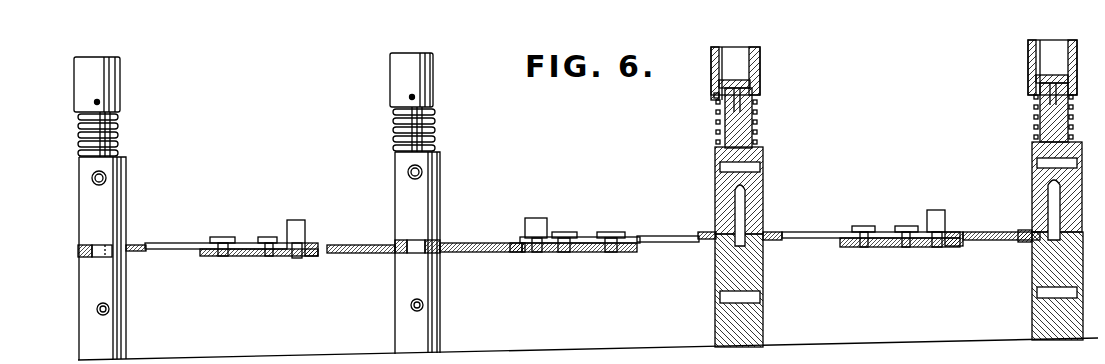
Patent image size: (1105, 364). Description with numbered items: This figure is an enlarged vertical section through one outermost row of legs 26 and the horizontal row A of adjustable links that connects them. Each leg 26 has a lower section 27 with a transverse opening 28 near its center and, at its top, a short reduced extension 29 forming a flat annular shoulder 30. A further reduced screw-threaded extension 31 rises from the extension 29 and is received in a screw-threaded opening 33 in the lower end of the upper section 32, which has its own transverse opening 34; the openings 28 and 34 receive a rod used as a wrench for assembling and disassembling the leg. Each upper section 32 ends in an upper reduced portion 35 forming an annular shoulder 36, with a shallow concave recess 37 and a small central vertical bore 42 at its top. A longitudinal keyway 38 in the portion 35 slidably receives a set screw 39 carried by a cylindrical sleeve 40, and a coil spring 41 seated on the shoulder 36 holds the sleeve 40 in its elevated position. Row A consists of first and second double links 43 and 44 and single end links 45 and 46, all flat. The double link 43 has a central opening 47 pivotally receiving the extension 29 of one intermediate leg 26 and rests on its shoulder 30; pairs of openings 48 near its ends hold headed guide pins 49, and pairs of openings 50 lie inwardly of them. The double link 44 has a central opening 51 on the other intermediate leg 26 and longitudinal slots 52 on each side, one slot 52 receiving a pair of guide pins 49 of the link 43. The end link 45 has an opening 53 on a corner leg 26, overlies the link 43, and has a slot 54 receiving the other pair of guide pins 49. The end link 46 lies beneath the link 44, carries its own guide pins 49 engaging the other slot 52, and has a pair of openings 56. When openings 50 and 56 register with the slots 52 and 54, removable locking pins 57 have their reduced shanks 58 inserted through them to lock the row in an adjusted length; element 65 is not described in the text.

The leg 26 is at (555, 200).
The lower section 27 is at (126, 312).
The transverse opening 28 is at (97, 310).
The reduced extension 29 is at (95, 256).
The annular shoulder 30 is at (395, 250).
The screw-threaded extension 31 is at (736, 195).
The upper section 32 is at (122, 200).
The screw-threaded opening 33 is at (752, 200).
The transverse opening 34 is at (106, 178).
The upper reduced portion 35 is at (118, 130).
The annular shoulder 36 is at (120, 158).
The concave recess 37 is at (752, 81).
The keyway 38 is at (80, 130).
The set screw 39 is at (100, 102).
The sleeve 40 is at (120, 70).
The coil spring 41 is at (118, 143).
The central vertical bore 42 is at (755, 92).
The first double link 43 is at (360, 253).
The second double link 44 is at (815, 233).
The single end link 45 is at (150, 244).
The single end link 46 is at (1008, 240).
The opening 47 is at (440, 258).
The openings 48 is at (268, 257).
The headed guide pins 49 is at (222, 257).
The openings 50 is at (312, 256).
The opening 51 is at (772, 234).
The longitudinal slots 52 is at (690, 242).
The opening 53 is at (78, 249).
The longitudinal slot 54 is at (170, 250).
The openings 56 is at (955, 247).
The removable locking pins 57 is at (305, 226).
The reduced shanks 58 is at (297, 258).
The bracket 65 is at (1028, 231).
The row of links A is at (568, 232).